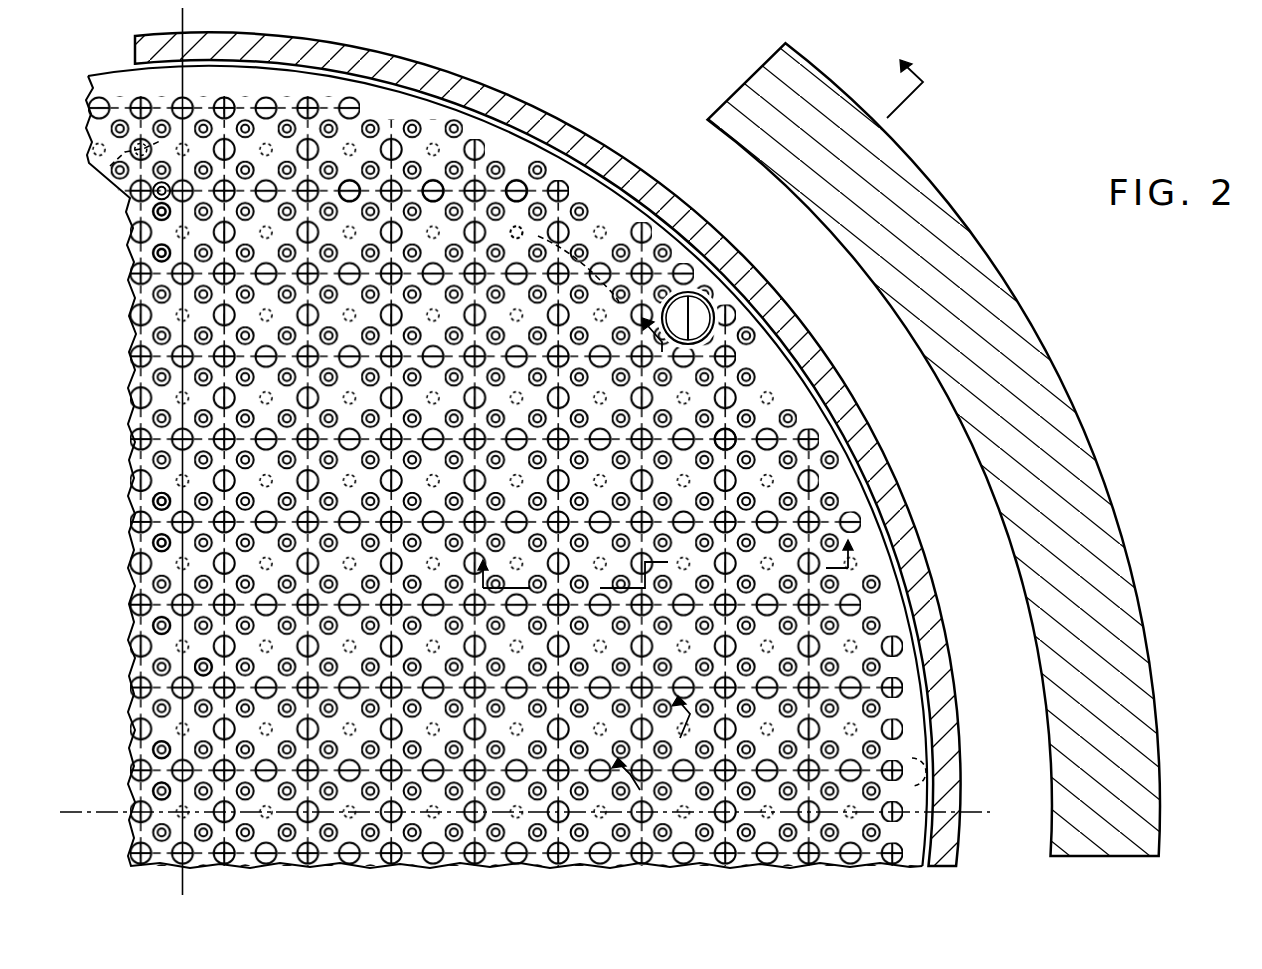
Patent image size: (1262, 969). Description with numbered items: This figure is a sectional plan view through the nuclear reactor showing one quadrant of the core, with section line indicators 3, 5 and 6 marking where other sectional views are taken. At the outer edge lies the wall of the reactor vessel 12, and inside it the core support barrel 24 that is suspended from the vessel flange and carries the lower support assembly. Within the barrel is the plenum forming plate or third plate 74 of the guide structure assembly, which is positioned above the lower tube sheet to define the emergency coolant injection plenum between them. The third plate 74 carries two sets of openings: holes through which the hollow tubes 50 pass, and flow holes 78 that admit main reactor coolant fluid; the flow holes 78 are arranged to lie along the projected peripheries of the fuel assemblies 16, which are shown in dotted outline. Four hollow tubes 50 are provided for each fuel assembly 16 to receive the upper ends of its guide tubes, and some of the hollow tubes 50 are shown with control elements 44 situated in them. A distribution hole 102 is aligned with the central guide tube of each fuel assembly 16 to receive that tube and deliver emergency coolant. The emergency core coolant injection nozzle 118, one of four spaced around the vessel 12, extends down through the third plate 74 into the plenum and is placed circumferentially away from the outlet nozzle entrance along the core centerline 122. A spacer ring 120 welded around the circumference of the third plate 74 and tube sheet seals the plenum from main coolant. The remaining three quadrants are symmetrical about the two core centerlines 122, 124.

The reactor vessel 12 is at (1096, 470).
The fuel assemblies 16 is at (354, 184).
The core support barrel 24 is at (858, 424).
The control elements 44 is at (150, 546).
The hollow tubes 50 is at (195, 664).
The third plate 74 is at (900, 590).
The flow holes 78 is at (150, 244).
The distribution holes 102 is at (120, 166).
The injection nozzle 118 is at (714, 326).
The spacer ring 120 is at (930, 752).
The core centerline 122 is at (86, 814).
The core centerline 124 is at (186, 24).
The section line 3- 3 is at (667, 552).
The section line 5- 5 is at (639, 730).
The section line 6- 6 is at (772, 197).